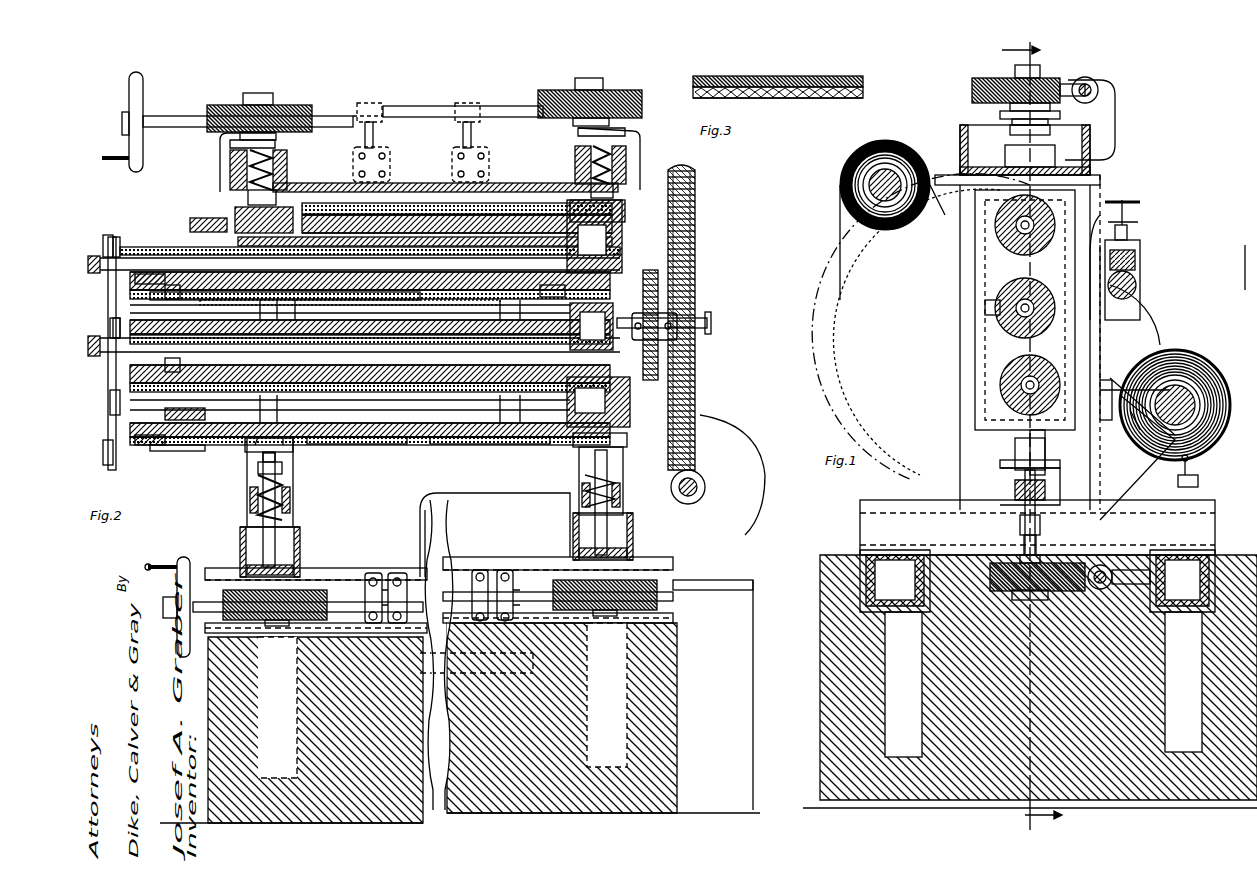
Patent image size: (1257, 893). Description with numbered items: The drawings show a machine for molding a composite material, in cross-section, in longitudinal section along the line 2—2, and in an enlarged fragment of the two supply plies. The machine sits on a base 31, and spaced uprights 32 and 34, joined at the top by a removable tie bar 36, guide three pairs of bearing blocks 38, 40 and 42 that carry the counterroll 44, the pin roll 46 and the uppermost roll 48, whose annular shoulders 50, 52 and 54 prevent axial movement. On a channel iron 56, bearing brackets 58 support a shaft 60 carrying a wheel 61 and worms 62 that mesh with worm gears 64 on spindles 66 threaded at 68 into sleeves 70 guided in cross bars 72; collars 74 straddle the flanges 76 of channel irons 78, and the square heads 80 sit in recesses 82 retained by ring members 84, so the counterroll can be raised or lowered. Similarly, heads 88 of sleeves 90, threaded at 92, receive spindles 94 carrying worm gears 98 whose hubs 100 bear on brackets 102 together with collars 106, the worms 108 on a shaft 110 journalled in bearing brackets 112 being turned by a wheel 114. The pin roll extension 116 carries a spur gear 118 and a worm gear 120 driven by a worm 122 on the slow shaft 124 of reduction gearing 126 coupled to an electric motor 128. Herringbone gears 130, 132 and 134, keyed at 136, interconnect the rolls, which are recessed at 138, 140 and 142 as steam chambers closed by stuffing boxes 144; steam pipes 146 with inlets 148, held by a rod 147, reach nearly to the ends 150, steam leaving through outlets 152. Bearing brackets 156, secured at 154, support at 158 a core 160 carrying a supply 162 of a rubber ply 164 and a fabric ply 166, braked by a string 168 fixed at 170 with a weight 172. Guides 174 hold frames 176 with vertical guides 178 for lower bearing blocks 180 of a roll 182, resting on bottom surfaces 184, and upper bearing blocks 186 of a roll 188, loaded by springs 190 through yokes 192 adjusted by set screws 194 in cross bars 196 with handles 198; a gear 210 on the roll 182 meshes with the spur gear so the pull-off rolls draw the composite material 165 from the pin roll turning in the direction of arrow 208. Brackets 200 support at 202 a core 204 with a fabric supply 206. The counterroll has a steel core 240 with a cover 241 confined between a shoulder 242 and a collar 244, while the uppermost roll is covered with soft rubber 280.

In FIG. 1, the section line 2— 2 is at (1039, 436).
In FIG. 2, the base 31 is at (668, 693).
In FIG. 1, the base 31 is at (828, 637).
In FIG. 2, the upright 32 is at (580, 465).
In FIG. 2, the upright 34 is at (233, 488).
In FIG. 1, the upright 34 is at (1000, 350).
In FIG. 2, the tie bar 36 is at (470, 193).
In FIG. 1, the tie bar 36 is at (965, 155).
In FIG. 2, the bearing blocks 38 is at (300, 450).
In FIG. 1, the bearing blocks 38 is at (1000, 385).
In FIG. 2, the bearing blocks 40 is at (370, 302).
In FIG. 1, the bearing blocks 40 is at (1000, 318).
In FIG. 2, the bearing blocks 42 is at (318, 213).
In FIG. 1, the bearing blocks 42 is at (1000, 270).
In FIG. 2, the counterroll 44 is at (400, 445).
In FIG. 1, the counterroll 44 is at (1000, 372).
In FIG. 2, the pin roll 46 is at (450, 300).
In FIG. 1, the pin roll 46 is at (1000, 305).
In FIG. 2, the uppermost roll 48 is at (402, 220).
In FIG. 1, the uppermost roll 48 is at (1000, 240).
In FIG. 2, the annular shoulder 50 is at (362, 400).
In FIG. 2, the annular shoulder 52 is at (591, 326).
In FIG. 2, the annular shoulder 54 is at (552, 287).
In FIG. 2, the channel iron 56 is at (690, 612).
In FIG. 1, the channel iron 56 is at (860, 535).
In FIG. 2, the bearing brackets 58 is at (395, 572).
In FIG. 2, the shaft 60 is at (385, 572).
In FIG. 1, the shaft 60 is at (1150, 565).
In FIG. 2, the wheel 61 is at (178, 560).
In FIG. 1, the worms 62 is at (1100, 565).
In FIG. 2, the worm gears 64 is at (225, 600).
In FIG. 1, the worm gears 64 is at (990, 580).
In FIG. 2, the spindles 66 is at (275, 540).
In FIG. 1, the spindles 66 is at (1015, 490).
In FIG. 2, the thread 68 is at (282, 500).
In FIG. 2, the sleeves 70 is at (292, 470).
In FIG. 1, the sleeves 70 is at (1022, 453).
In FIG. 2, the cross bars 72 is at (290, 490).
In FIG. 1, the cross bars 72 is at (1000, 466).
In FIG. 2, the collars 74 is at (330, 600).
In FIG. 1, the collars 74 is at (1040, 545).
In FIG. 2, the flanges 76 is at (247, 568).
In FIG. 1, the flanges 76 is at (1020, 528).
In FIG. 2, the channel irons 78 is at (240, 532).
In FIG. 1, the channel irons 78 is at (960, 470).
In FIG. 2, the heads 80 is at (282, 468).
In FIG. 2, the recesses 82 is at (245, 445).
In FIG. 2, the ring members 84 is at (263, 457).
In FIG. 2, the heads 88 is at (235, 212).
In FIG. 2, the sleeves 90 is at (275, 196).
In FIG. 1, the sleeves 90 is at (1040, 140).
In FIG. 2, the internal thread 92 is at (272, 165).
In FIG. 2, the spindles 94 is at (230, 165).
In FIG. 1, the spindles 94 is at (1014, 135).
In FIG. 2, the worm gears 98 is at (283, 103).
In FIG. 1, the worm gears 98 is at (982, 75).
In FIG. 2, the hubs 100 is at (424, 126).
In FIG. 1, the hubs 100 is at (1010, 107).
In FIG. 2, the brackets 102 is at (220, 150).
In FIG. 1, the brackets 102 is at (1000, 115).
In FIG. 2, the collars 106 is at (275, 144).
In FIG. 1, the collars 106 is at (1048, 120).
In FIG. 1, the worms 108 is at (1095, 82).
In FIG. 2, the shaft 110 is at (335, 108).
In FIG. 1, the shaft 110 is at (1098, 90).
In FIG. 2, the bearing brackets 112 is at (395, 130).
In FIG. 1, the bearing brackets 112 is at (1115, 118).
In FIG. 2, the wheel 114 is at (140, 85).
In FIG. 2, the extension 116 is at (711, 323).
In FIG. 2, the spur gear 118 is at (650, 380).
In FIG. 1, the spur gear 118 is at (1000, 290).
In FIG. 2, the worm gear 120 is at (698, 400).
In FIG. 1, the worm gear 120 is at (880, 333).
In FIG. 2, the worm 122 is at (705, 485).
In FIG. 2, the slow shaft 124 is at (705, 495).
In FIG. 2, the reduction gearing 126 is at (765, 470).
In FIG. 2, the electric motor 128 is at (490, 470).
In FIG. 2, the gear 130 is at (205, 448).
In FIG. 2, the gear 132 is at (170, 354).
In FIG. 2, the gear 134 is at (165, 300).
In FIG. 2, the key 136 is at (190, 228).
In FIG. 2, the steam chamber 138 is at (510, 447).
In FIG. 1, the steam chamber 138 is at (1000, 398).
In FIG. 2, the steam chamber 140 is at (370, 324).
In FIG. 1, the steam chamber 140 is at (1025, 300).
In FIG. 2, the steam chamber 142 is at (430, 222).
In FIG. 1, the steam chamber 142 is at (1022, 217).
In FIG. 2, the stuffing boxes 144 is at (140, 364).
In FIG. 2, the steam delivery pipes 146 is at (108, 238).
In FIG. 1, the steam delivery pipes 146 is at (1030, 342).
In FIG. 2, the rod 147 is at (100, 318).
In FIG. 2, the inlets 148 is at (118, 238).
In FIG. 1, the inlets 148 is at (1025, 289).
In FIG. 2, the ends 150 is at (622, 232).
In FIG. 2, the outlets 152 is at (152, 468).
In FIG. 1, the bolted connection 154 is at (1060, 447).
In FIG. 1, the bearing brackets 156 is at (1112, 395).
In FIG. 1, the bearing 158 is at (1215, 350).
In FIG. 1, the core 160 is at (1225, 385).
In FIG. 1, the supply roll 162 is at (1215, 440).
In FIG. 3, the rubber ply 164 is at (820, 75).
In FIG. 1, the rubber ply 164 is at (1142, 433).
In FIG. 1, the composite material 165 is at (1178, 305).
In FIG. 3, the textile fabric ply 166 is at (835, 98).
In FIG. 1, the textile fabric ply 166 is at (1140, 455).
In FIG. 1, the string 168 is at (1142, 319).
In FIG. 1, the anchor point 170 is at (1074, 413).
In FIG. 1, the weight 172 is at (1200, 480).
In FIG. 1, the guides 174 is at (1100, 210).
In FIG. 1, the frames 176 is at (1140, 260).
In FIG. 1, the vertical guides 178 is at (1140, 300).
In FIG. 1, the lower bearing blocks 180 is at (1140, 318).
In FIG. 1, the lower pull-off roll 182 is at (1140, 310).
In FIG. 1, the bottom surfaces 184 is at (1145, 325).
In FIG. 1, the upper bearing blocks 186 is at (1135, 275).
In FIG. 1, the upper pull-off roll 188 is at (1135, 262).
In FIG. 1, the compression springs 190 is at (1130, 250).
In FIG. 1, the yokes 192 is at (1125, 245).
In FIG. 1, the set screws 194 is at (1122, 225).
In FIG. 1, the cross bars 196 is at (1122, 200).
In FIG. 1, the handles 198 is at (1138, 203).
In FIG. 1, the bearing brackets 200 is at (1000, 230).
In FIG. 1, the bearing 202 is at (845, 205).
In FIG. 1, the core 204 is at (845, 187).
In FIG. 1, the fabric supply 206 is at (845, 168).
In FIG. 1, the arrow 208 is at (1000, 332).
In FIG. 1, the gear 210 is at (1135, 290).
In FIG. 2, the steel core 240 is at (418, 445).
In FIG. 2, the cover 241 is at (470, 450).
In FIG. 1, the cover 241 is at (1000, 362).
In FIG. 2, the annular shoulder 242 is at (565, 437).
In FIG. 2, the collar 244 is at (335, 445).
In FIG. 2, the soft rubber cover 280 is at (355, 220).
In FIG. 1, the soft rubber cover 280 is at (995, 255).